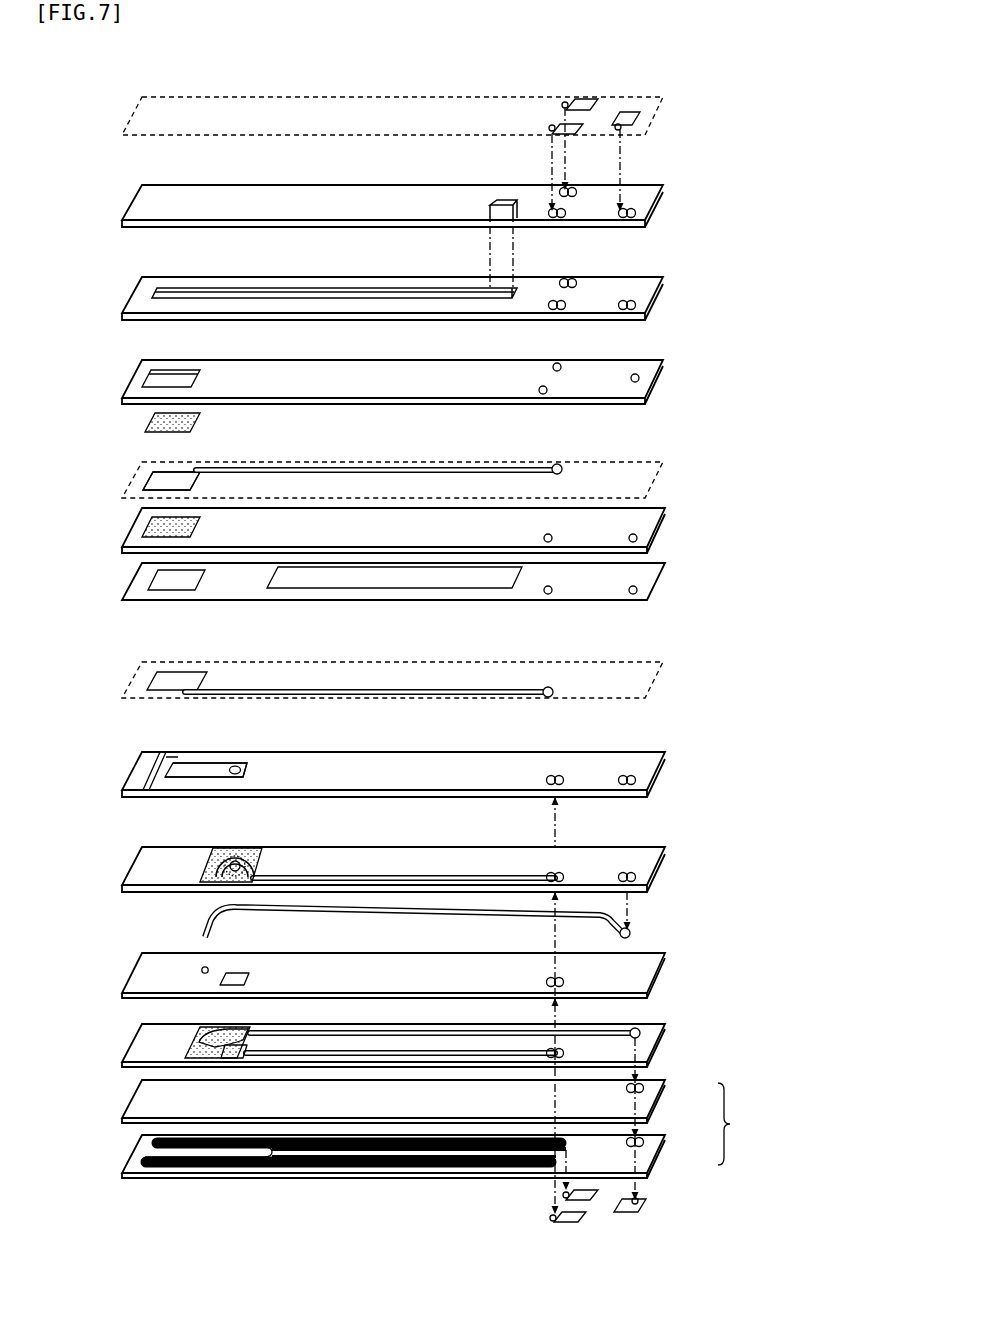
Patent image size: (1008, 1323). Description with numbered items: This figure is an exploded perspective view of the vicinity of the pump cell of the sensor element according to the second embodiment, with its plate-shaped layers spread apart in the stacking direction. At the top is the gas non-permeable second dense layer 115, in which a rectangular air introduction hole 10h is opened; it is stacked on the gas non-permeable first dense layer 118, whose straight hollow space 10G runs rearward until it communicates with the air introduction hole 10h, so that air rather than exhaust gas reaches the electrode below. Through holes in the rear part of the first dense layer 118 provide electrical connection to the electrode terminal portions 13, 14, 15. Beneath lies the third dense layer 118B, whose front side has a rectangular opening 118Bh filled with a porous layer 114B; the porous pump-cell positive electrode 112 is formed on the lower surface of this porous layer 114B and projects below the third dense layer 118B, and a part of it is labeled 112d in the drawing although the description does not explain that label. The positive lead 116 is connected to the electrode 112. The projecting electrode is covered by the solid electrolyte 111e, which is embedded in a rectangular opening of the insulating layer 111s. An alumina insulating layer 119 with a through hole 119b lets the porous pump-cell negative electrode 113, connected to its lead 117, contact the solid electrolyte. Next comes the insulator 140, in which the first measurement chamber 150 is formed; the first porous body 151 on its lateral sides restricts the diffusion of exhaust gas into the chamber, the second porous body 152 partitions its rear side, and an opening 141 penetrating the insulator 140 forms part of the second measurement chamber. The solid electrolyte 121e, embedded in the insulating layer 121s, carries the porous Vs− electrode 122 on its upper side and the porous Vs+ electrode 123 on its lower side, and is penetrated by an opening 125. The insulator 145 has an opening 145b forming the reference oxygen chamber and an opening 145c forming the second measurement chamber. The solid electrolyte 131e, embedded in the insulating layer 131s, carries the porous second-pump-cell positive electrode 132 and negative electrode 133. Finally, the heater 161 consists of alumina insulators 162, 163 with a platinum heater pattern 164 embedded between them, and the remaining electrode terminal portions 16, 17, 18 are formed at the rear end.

The electrode terminal portion 13 is at (565, 103).
The electrode terminal portion 14 is at (619, 125).
The electrode terminal portion 15 is at (552, 127).
The second dense layer 115 is at (445, 192).
The air introduction hole 10h is at (500, 199).
The first dense layer 118 is at (678, 289).
The hollow space 10G is at (186, 291).
The third dense layer 118B is at (130, 370).
The opening 118Bh is at (192, 376).
The porous layer 114B is at (200, 422).
The Ip1+ electrode 112 is at (165, 480).
The electrode pad 112d is at (192, 469).
The Ip1+ lead 116 is at (380, 467).
The insulating layer 111s is at (680, 527).
The solid electrolyte 111e is at (165, 527).
The alumina insulating layer 119 is at (680, 583).
The through hole 119b is at (195, 597).
The Ip1− electrode 113 is at (178, 682).
The Ip1− lead 117 is at (354, 689).
The insulator 140 is at (680, 763).
The first measurement chamber 150 is at (158, 769).
The first porous body 151 is at (170, 755).
The second porous body 152 is at (248, 764).
The opening 141 is at (233, 767).
The insulating layer 121s is at (680, 858).
The solid electrolyte 121e is at (265, 855).
The Vs− electrode 122 is at (216, 858).
The opening 125 is at (238, 861).
The Vs+ electrode 123 is at (204, 925).
The insulator 145 is at (660, 976).
The opening 145b is at (200, 970).
The opening 145c is at (248, 975).
The insulating layer 131s is at (658, 1047).
The solid electrolyte 131e is at (200, 1045).
The Ip2+ electrode 132 is at (204, 1034).
The Ip2− electrode 133 is at (245, 1047).
The insulator 162 is at (660, 1100).
The insulator 163 is at (660, 1152).
The heater pattern 164 is at (152, 1143).
The heater 161 is at (745, 1124).
The electrode terminal portion 16 is at (563, 1195).
The electrode terminal portion 17 is at (642, 1203).
The electrode terminal portion 18 is at (550, 1218).